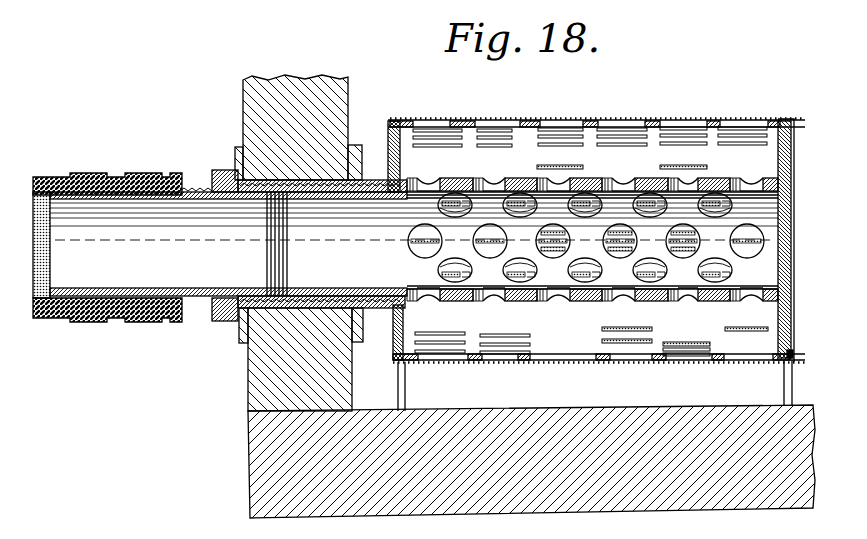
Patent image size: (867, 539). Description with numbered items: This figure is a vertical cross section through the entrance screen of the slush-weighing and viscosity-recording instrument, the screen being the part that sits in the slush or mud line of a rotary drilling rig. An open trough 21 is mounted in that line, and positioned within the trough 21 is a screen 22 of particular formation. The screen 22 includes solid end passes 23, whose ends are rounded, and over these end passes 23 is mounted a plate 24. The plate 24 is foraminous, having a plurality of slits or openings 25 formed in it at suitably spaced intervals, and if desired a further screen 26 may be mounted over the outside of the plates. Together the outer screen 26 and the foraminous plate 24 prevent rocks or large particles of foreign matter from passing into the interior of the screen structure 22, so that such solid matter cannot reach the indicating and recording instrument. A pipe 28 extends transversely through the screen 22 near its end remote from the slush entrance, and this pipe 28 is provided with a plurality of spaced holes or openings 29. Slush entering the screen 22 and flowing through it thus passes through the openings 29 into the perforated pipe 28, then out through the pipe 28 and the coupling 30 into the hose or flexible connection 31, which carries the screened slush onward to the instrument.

The open trough 21 is at (722, 497).
The screen 22 is at (650, 129).
The solid end passes 23 is at (791, 127).
The plate 24 is at (590, 122).
The slits or openings 25 is at (490, 142).
The screen 26 is at (693, 119).
The pipe 28 is at (485, 252).
The holes or openings 29 is at (458, 200).
The coupling 30 is at (200, 297).
The hose or flexible connection 31 is at (118, 318).